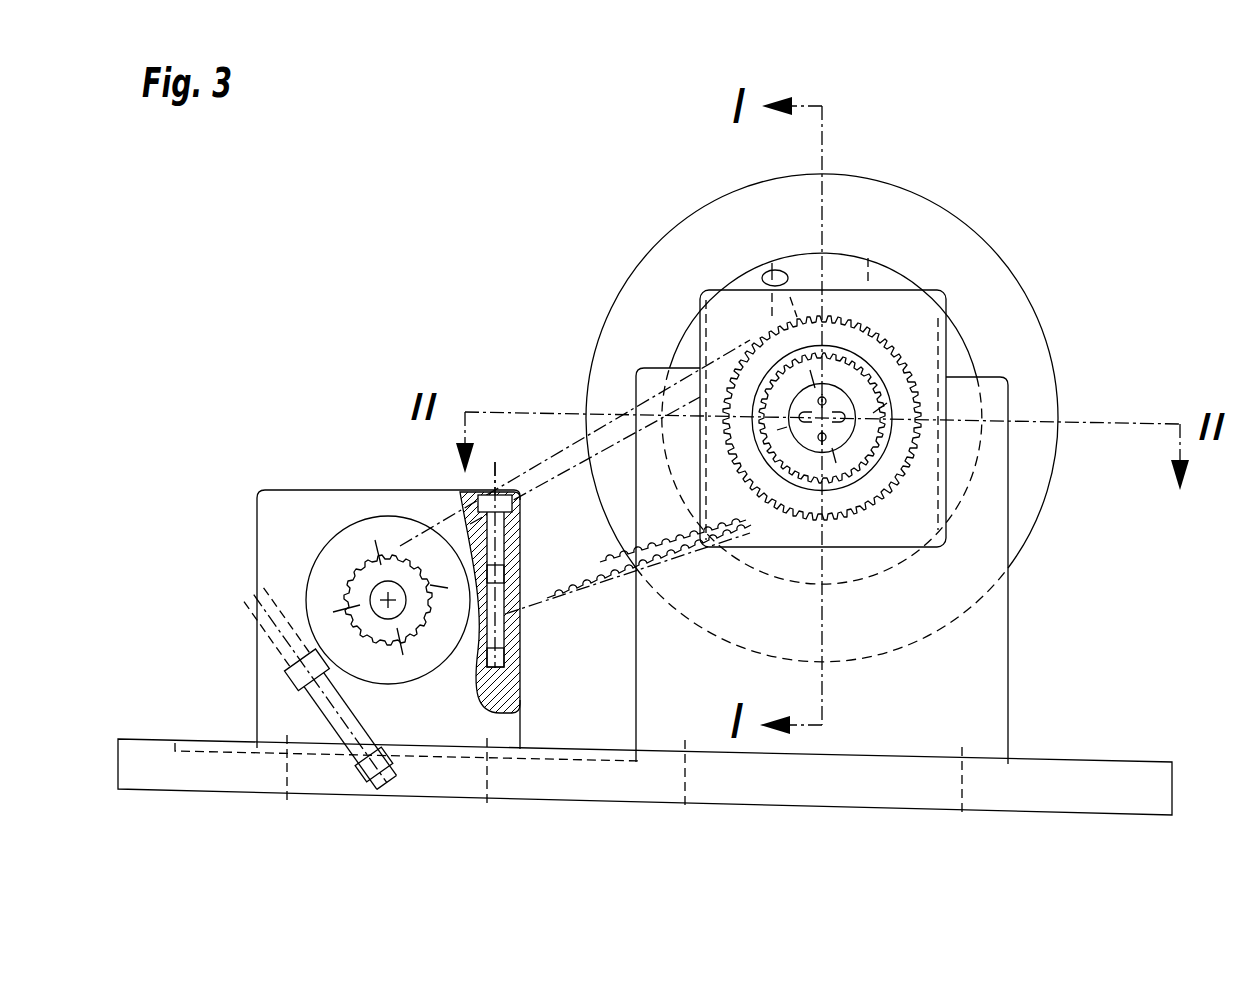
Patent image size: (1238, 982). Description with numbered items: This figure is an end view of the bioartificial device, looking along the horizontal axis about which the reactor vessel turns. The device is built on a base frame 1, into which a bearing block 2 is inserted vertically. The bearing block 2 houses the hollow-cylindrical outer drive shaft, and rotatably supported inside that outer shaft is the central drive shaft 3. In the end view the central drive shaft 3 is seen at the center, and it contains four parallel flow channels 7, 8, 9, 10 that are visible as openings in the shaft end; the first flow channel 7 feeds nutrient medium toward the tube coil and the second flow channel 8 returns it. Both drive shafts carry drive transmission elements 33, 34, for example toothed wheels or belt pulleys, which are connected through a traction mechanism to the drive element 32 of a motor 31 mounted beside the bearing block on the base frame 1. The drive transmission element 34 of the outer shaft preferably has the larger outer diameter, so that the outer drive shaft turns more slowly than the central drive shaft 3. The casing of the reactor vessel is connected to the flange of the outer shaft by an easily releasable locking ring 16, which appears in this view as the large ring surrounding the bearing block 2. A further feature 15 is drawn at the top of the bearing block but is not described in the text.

The base frame 1 is at (960, 697).
The bearing block 2 is at (908, 310).
The central drive shaft 3 is at (828, 396).
The flow channel 7 is at (890, 493).
The flow channel 8 is at (822, 392).
The flow channel 9 is at (805, 418).
The flow channel 10 is at (832, 433).
The lubrication nipple 15 is at (768, 272).
The locking ring 16 is at (908, 240).
The motor 31 is at (332, 577).
The drive element 32 is at (366, 576).
The drive transmission element 33 is at (836, 440).
The drive transmission element 34 is at (850, 411).